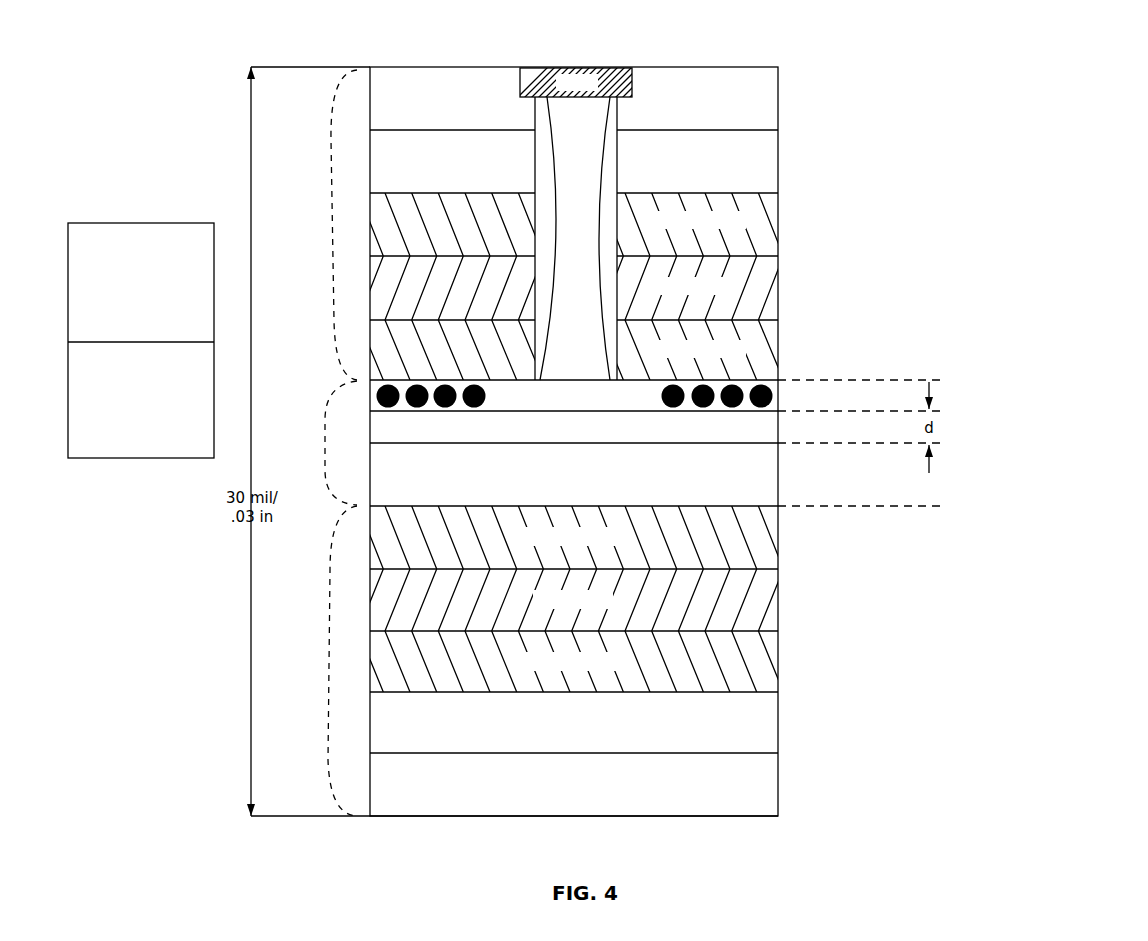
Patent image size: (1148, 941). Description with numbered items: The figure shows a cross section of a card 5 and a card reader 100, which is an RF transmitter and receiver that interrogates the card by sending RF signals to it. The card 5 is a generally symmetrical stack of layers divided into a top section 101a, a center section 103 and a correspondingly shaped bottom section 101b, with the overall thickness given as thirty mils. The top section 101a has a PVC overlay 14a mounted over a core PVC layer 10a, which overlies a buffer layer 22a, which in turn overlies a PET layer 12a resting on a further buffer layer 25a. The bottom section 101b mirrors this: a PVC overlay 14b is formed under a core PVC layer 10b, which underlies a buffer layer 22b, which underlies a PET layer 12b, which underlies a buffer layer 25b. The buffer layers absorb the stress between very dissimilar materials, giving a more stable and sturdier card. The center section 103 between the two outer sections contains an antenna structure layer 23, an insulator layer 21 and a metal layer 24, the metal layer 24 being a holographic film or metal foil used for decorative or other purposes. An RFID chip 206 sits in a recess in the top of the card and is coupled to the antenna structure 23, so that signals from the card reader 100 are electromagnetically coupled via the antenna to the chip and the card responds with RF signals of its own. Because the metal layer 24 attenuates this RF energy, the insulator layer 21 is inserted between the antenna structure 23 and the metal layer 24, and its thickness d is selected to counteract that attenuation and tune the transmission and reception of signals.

The card 5 is at (388, 58).
The RFID chip 206 is at (542, 67).
The card reader 100 is at (157, 223).
The top section 101a is at (317, 225).
The center section 103 is at (324, 443).
The bottom section 101b is at (316, 661).
The PVC overlay 14a is at (778, 100).
The core PVC layer 10a is at (778, 162).
The buffer layer 22a is at (778, 225).
The PET layer 12a is at (778, 288).
The buffer layer 25a is at (778, 350).
The antenna structure layer 23 is at (778, 396).
The insulator layer 21 is at (778, 427).
The metal layer 24 is at (778, 473).
The buffer layer 25b is at (778, 538).
The PET layer 12b is at (778, 600).
The buffer layer 22b is at (778, 662).
The core PVC layer 10b is at (778, 726).
The PVC overlay 14b is at (778, 788).